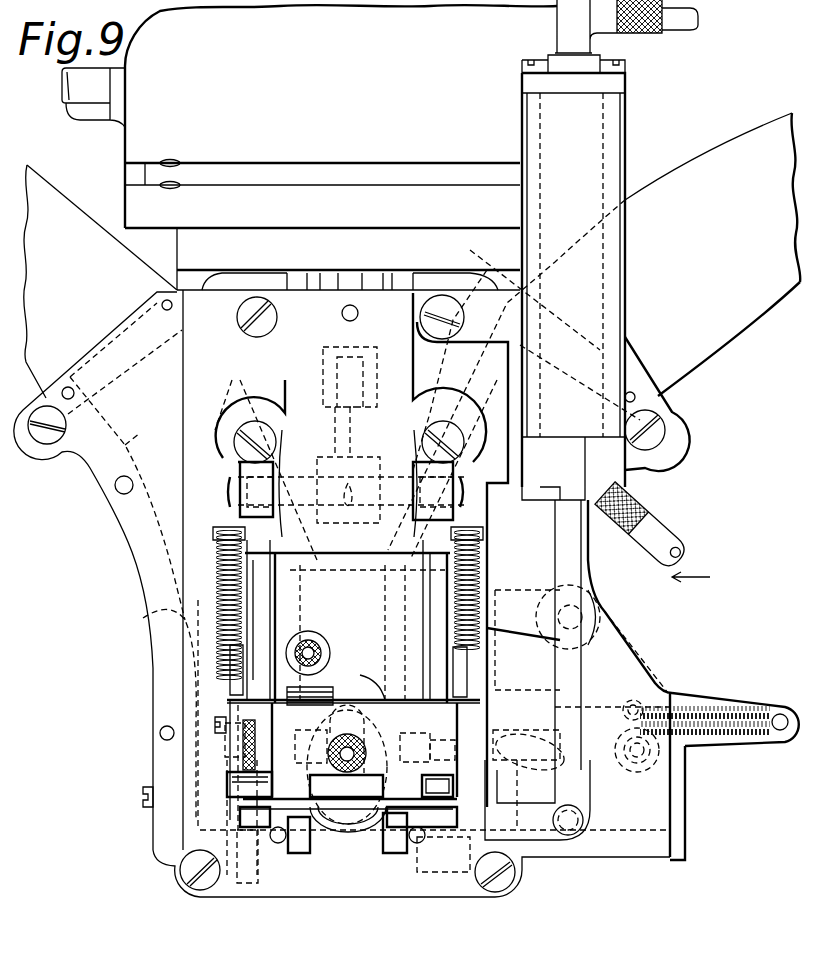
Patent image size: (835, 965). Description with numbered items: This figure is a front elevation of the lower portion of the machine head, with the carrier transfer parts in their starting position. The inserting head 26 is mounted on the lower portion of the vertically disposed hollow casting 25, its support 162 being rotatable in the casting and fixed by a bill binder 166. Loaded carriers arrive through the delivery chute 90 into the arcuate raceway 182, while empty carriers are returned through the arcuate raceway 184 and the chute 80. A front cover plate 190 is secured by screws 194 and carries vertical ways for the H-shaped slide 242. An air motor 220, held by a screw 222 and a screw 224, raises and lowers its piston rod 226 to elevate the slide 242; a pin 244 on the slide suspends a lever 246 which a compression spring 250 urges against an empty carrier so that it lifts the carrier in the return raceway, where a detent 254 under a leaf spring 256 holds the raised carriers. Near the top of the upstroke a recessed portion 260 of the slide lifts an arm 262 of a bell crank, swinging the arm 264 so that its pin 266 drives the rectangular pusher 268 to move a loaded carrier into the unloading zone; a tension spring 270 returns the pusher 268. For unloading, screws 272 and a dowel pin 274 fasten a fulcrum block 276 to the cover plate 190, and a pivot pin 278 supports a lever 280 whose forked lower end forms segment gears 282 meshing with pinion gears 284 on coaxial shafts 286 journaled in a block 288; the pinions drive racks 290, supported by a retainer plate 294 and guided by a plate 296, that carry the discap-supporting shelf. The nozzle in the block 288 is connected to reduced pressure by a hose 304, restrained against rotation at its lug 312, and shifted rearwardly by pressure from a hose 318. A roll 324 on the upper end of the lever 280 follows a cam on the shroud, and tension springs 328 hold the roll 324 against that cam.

The casting 25 is at (359, 90).
The inserting head 26 is at (703, 577).
The chute 80 is at (86, 204).
The delivery chute 90 is at (718, 152).
The support 162 is at (177, 260).
The bill binder 166 is at (62, 100).
The arcuate raceway 182 is at (485, 400).
The arcuate raceway 184 is at (130, 446).
The front cover plate 190 is at (183, 396).
The screws 194 is at (180, 872).
The air motor 220 is at (625, 122).
The screw 222 is at (441, 334).
The screw 224 is at (667, 435).
The piston rod 226 is at (583, 659).
The slide 242 is at (383, 617).
The pin 244 is at (247, 790).
The lever 246 is at (248, 885).
The compression spring 250 is at (233, 740).
The detent 254 is at (143, 618).
The leaf spring 256 is at (153, 689).
The recessed portion 260 is at (445, 749).
The arm 262 is at (495, 630).
The arm 264 is at (638, 667).
The pin 266 is at (626, 768).
The pusher 268 is at (687, 790).
The tension spring 270 is at (718, 709).
The screws 272 is at (272, 428).
The dowel pin 274 is at (356, 320).
The fulcrum block 276 is at (278, 360).
The pivot pin 278 is at (299, 475).
The lever 280 is at (413, 460).
The segment gears 282 is at (426, 735).
The pinion gears 284 is at (222, 714).
The shafts 286 is at (325, 780).
The block 288 is at (361, 677).
The racks 290 is at (220, 843).
The retainer plate 294 is at (356, 815).
The plate 296 is at (232, 657).
The hose 304 is at (346, 786).
The lug 312 is at (351, 735).
The hose 318 is at (316, 645).
The roll 324 is at (350, 457).
The tension springs 328 is at (483, 552).